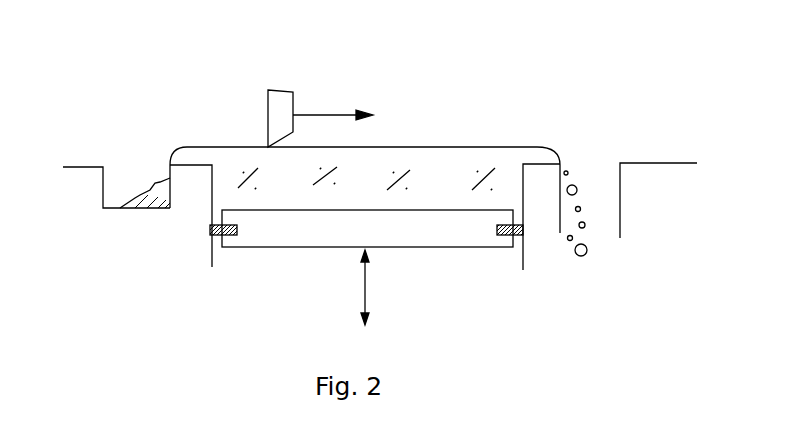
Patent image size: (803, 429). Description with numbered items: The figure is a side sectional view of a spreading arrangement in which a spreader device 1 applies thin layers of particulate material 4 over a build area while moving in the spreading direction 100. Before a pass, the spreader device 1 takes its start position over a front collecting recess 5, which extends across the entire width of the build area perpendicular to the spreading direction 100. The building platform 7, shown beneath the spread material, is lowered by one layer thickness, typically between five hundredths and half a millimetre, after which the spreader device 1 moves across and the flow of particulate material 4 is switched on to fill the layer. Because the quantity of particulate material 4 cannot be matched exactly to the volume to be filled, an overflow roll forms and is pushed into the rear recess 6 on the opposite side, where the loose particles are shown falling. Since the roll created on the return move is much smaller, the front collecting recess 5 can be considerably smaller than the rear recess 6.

The spreader device 1 is at (278, 108).
The spreading direction 100 is at (348, 112).
The particulate material 4 is at (475, 155).
The collecting recess 5 is at (123, 195).
The rear recess 6 is at (593, 187).
The building platform 7 is at (342, 244).